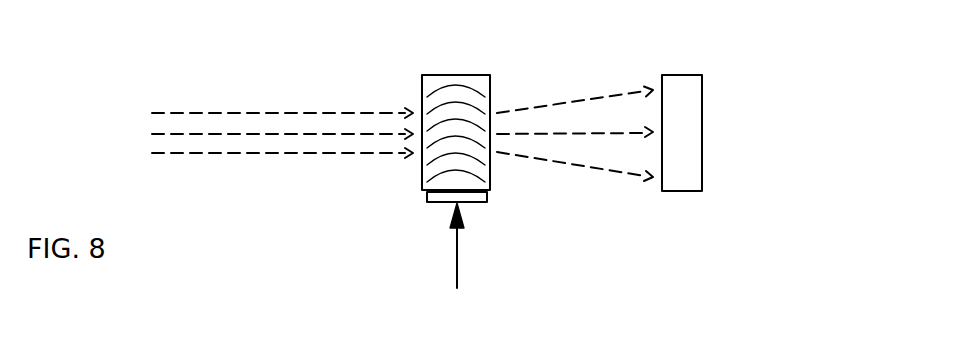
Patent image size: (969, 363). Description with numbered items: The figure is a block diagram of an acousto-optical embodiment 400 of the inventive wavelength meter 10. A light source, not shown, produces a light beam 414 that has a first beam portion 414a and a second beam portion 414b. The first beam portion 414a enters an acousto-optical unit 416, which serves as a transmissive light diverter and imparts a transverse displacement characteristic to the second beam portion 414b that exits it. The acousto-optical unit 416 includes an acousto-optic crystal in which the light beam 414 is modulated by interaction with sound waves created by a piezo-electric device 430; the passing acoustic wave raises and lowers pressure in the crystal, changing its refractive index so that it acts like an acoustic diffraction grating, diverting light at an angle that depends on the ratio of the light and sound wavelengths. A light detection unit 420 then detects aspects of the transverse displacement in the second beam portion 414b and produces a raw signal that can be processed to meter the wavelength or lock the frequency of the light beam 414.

The wavelength meter 10 is at (826, 287).
The acousto-optical embodiment 400 is at (226, 286).
The light beam 414 is at (245, 91).
The first beam portion 414a is at (282, 133).
The second beam portion 414b is at (546, 76).
The acousto-optical unit 416 is at (423, 170).
The light detection unit 420 is at (682, 75).
The piezo-electric device 430 is at (470, 205).